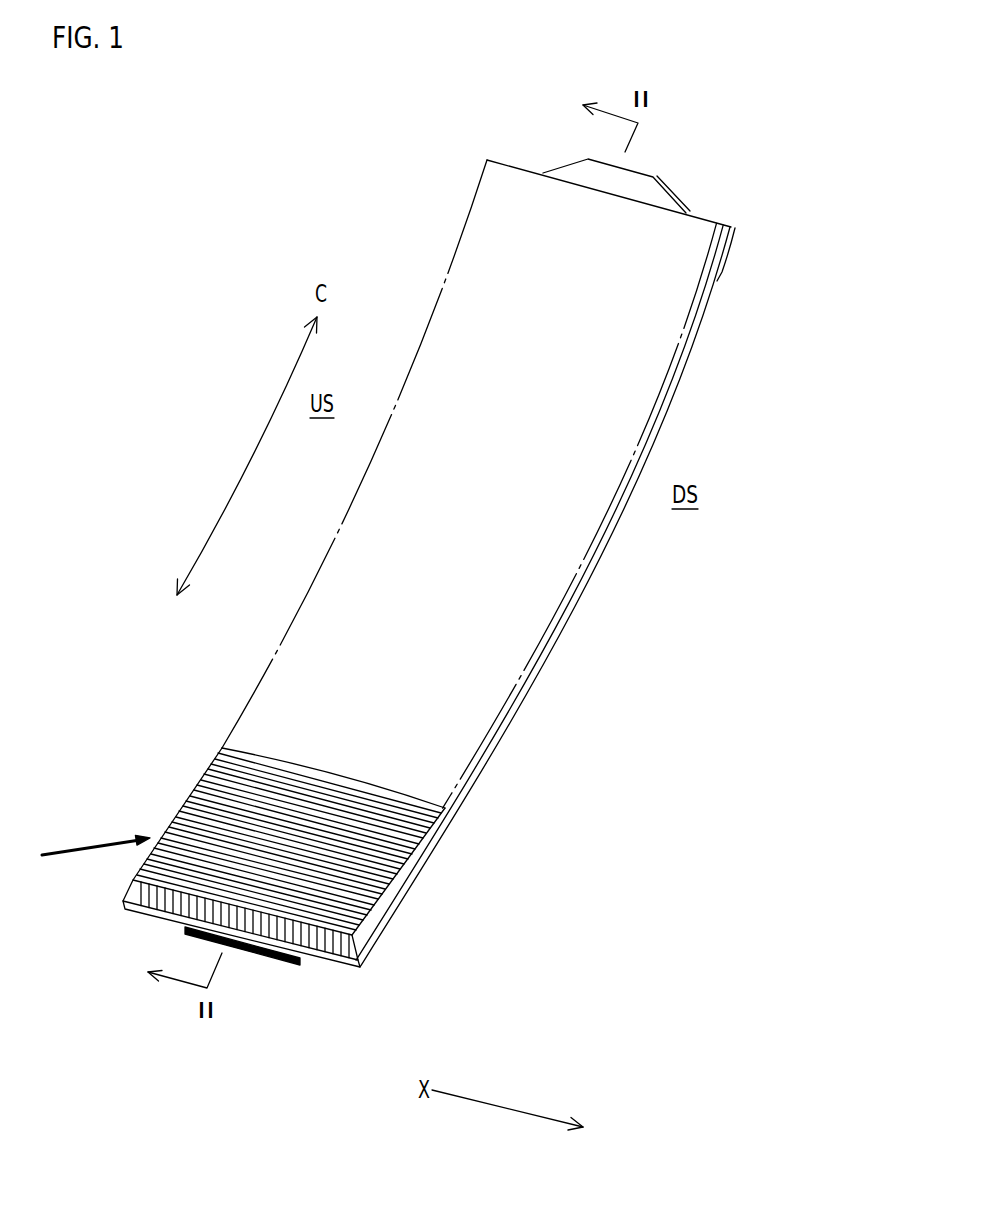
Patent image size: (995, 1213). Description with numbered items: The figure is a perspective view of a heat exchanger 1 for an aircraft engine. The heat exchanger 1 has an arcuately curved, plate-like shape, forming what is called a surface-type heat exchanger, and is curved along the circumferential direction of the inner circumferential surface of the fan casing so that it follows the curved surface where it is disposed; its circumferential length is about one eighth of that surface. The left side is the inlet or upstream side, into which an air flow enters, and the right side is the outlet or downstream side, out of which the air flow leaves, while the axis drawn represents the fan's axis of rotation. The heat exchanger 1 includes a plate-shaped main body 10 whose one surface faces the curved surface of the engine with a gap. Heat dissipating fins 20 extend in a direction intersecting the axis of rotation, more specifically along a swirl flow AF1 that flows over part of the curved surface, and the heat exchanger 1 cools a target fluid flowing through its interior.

The heat exchanger 1 is at (311, 176).
The main body 10 is at (323, 960).
The heat dissipating fins 20 is at (610, 397).
The swirl flow AF1 is at (96, 839).